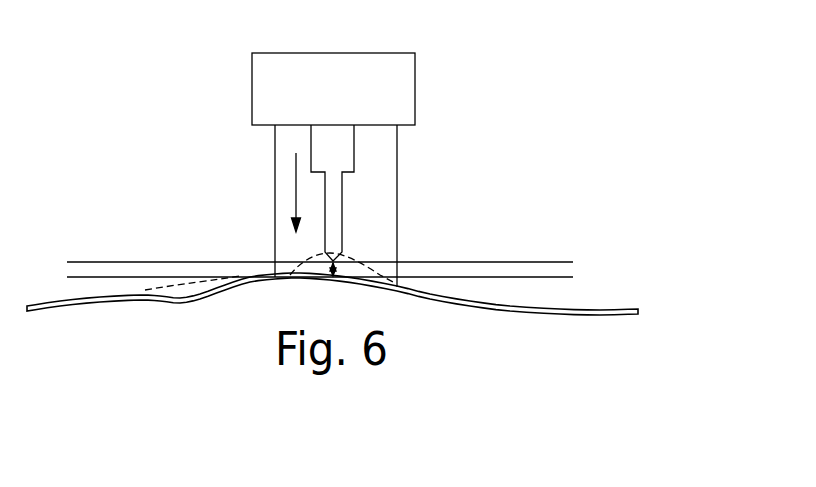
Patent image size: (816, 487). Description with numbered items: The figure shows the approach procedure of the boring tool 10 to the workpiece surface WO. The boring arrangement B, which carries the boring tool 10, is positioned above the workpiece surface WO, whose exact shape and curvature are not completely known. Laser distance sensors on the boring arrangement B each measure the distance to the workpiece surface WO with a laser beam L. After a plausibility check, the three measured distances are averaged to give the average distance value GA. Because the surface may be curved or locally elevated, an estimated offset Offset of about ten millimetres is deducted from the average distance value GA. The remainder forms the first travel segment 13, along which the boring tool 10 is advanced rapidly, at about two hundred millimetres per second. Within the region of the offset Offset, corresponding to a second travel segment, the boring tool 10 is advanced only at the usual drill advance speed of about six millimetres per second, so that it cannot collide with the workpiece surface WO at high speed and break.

The boring arrangement B is at (388, 93).
The laser beam L is at (260, 173).
The first travel segment 13 is at (295, 199).
The boring tool 10 is at (343, 205).
The average distance value GA is at (236, 267).
The offset Offset is at (306, 281).
The workpiece surface WO is at (552, 289).